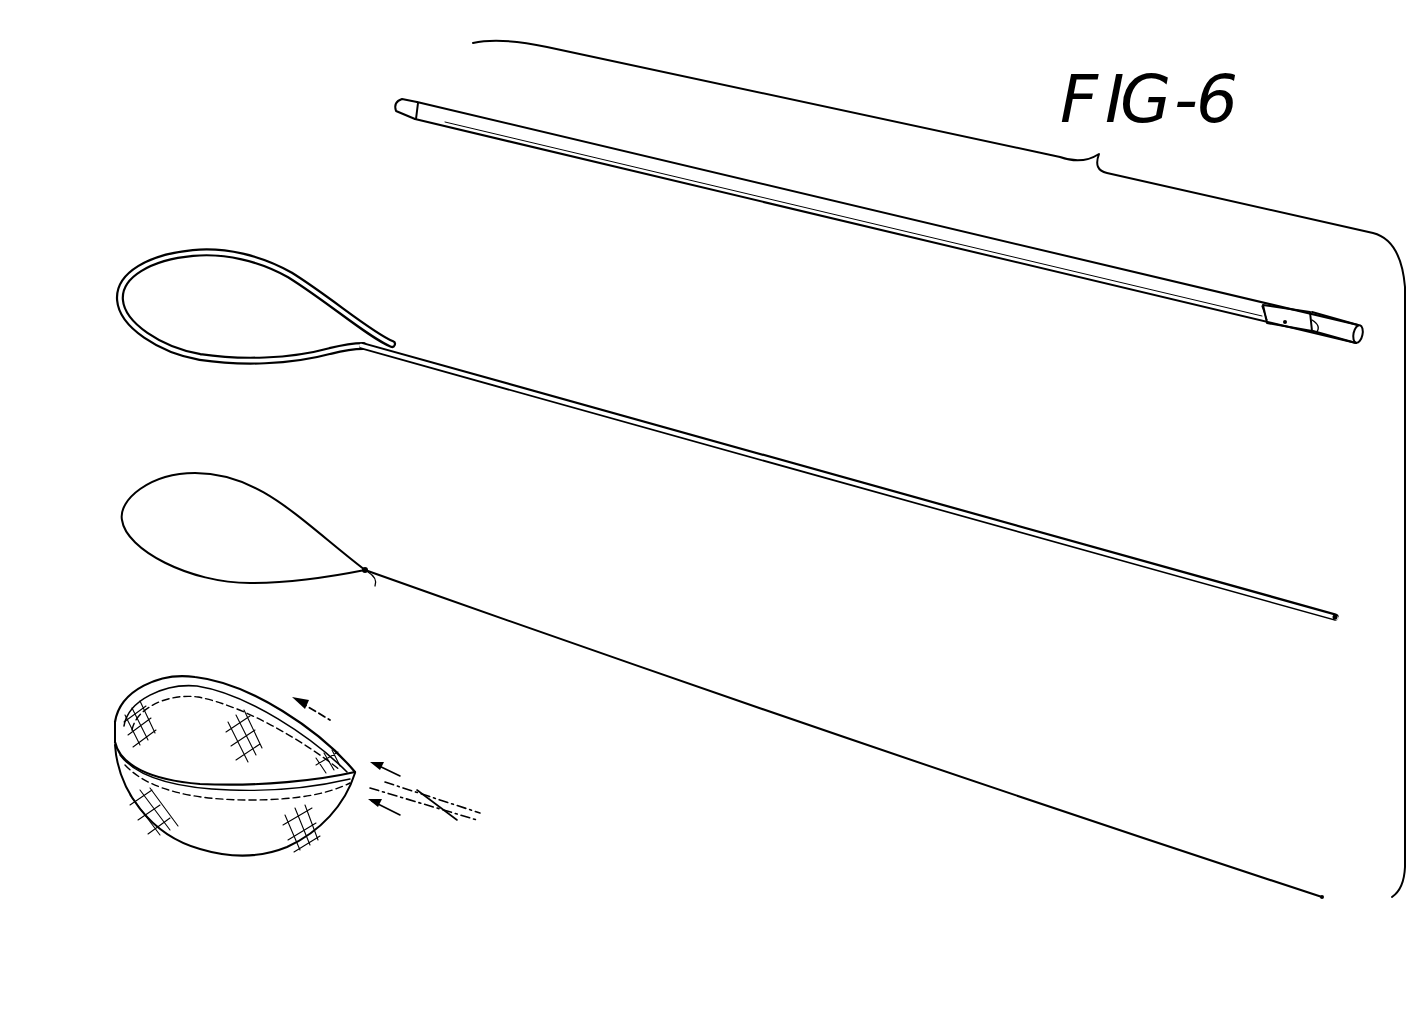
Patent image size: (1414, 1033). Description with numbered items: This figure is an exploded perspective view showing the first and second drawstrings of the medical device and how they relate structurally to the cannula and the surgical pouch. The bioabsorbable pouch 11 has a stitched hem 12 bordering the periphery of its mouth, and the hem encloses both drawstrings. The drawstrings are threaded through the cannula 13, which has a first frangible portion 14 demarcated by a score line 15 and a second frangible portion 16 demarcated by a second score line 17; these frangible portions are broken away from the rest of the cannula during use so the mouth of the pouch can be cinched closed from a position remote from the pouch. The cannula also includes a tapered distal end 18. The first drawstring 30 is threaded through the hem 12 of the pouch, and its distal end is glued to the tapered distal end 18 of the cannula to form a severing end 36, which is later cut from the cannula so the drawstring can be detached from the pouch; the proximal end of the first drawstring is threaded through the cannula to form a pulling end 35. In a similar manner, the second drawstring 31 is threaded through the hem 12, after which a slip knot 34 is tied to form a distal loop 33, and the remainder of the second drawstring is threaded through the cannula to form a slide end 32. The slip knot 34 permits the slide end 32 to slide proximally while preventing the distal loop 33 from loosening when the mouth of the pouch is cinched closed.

The bioabsorbable pouch 11 is at (262, 858).
The stitched hem 12 is at (195, 795).
The cannula 13 is at (884, 237).
The first frangible portion 14 is at (1338, 320).
The score line 15 is at (1321, 333).
The second frangible portion 16 is at (1281, 306).
The second score line 17 is at (1265, 308).
The tapered distal end 18 is at (411, 102).
The first drawstring 30 is at (796, 478).
The second drawstring 31 is at (820, 738).
The slide end 32 is at (1206, 856).
The distal loop 33 is at (172, 573).
The slip knot 34 is at (366, 567).
The pulling end 35 is at (1288, 598).
The severing end 36 is at (378, 336).